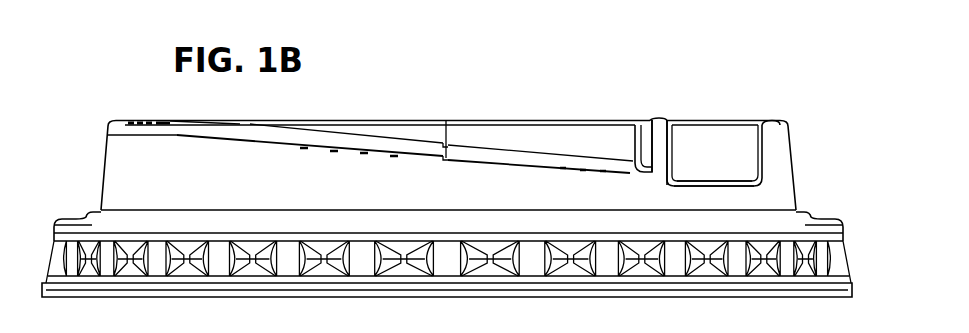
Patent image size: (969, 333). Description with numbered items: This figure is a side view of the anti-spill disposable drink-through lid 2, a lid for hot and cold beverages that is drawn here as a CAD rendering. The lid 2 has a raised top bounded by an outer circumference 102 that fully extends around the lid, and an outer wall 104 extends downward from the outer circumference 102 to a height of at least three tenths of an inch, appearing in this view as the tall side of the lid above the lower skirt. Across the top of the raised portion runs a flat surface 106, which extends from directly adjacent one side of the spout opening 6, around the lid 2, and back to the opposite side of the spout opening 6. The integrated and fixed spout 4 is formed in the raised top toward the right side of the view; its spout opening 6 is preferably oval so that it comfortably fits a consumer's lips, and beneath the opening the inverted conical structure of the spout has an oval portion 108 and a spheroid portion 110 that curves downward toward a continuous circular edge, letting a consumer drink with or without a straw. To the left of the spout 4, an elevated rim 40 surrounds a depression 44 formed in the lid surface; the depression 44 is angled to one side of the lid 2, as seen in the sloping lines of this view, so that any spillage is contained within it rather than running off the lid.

The anti-spill disposable drink-through lid 2 is at (772, 62).
The integrated spout 4 is at (791, 165).
The spout opening 6 is at (667, 118).
The elevated rim 40 is at (642, 136).
The depression 44 is at (368, 148).
The outer circumference 102 is at (121, 118).
The outer wall 104 is at (118, 175).
The flat surface 106 is at (512, 120).
The oval portion 108 is at (761, 147).
The spheroid portion 110 is at (672, 183).